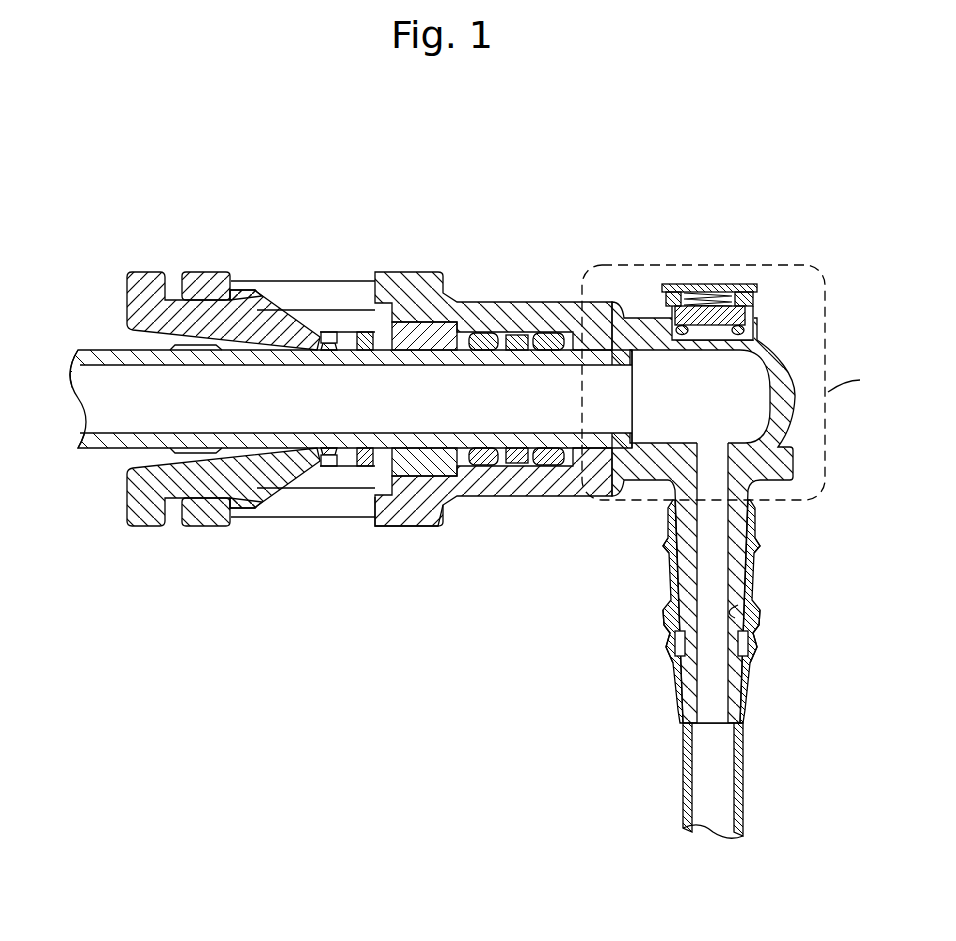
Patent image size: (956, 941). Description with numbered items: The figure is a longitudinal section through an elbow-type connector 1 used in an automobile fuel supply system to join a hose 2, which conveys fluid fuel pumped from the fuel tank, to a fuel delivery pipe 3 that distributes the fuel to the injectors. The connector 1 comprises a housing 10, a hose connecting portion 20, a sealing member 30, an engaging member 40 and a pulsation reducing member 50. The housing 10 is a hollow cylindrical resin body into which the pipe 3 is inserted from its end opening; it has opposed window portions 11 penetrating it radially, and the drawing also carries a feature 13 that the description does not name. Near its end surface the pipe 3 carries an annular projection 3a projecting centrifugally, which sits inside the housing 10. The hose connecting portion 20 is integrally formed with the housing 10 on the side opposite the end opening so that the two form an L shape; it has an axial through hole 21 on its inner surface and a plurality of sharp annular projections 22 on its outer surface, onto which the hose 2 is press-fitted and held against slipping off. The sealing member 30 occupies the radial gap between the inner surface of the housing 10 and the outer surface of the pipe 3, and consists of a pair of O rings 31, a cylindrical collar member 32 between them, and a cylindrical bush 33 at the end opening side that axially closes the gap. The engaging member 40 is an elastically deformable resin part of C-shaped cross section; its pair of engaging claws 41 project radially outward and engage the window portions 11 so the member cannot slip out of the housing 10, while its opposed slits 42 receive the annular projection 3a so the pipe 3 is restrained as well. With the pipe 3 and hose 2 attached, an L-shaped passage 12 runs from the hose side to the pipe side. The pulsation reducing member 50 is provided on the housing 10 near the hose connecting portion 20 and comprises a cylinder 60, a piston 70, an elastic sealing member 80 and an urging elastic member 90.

The connector 1 is at (136, 240).
The hose 2 is at (682, 760).
The fuel delivery pipe 3 is at (97, 440).
The annular projection 3a is at (327, 342).
The housing 10 is at (492, 305).
The window portions 11 is at (368, 507).
The passage 12 is at (740, 406).
The flange portion 13 is at (416, 530).
The hose connecting portion 20 is at (752, 682).
The axial through hole 21 is at (732, 607).
The sharp annular projections 22 is at (752, 572).
The sealing member 30 is at (452, 588).
The O rings 31 is at (484, 459).
The cylindrical collar member 32 is at (522, 459).
The cylindrical bush 33 is at (446, 463).
The engaging member 40 is at (142, 541).
The engaging claws 41 is at (240, 292).
The slits 42 is at (352, 340).
The pulsation reducing member 50 is at (770, 311).
The cylinder 60 is at (668, 305).
The piston 70 is at (742, 320).
The elastic sealing member 80 is at (674, 330).
The urging elastic member 90 is at (708, 300).